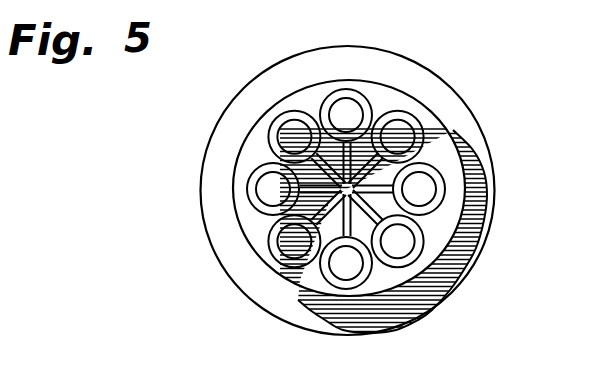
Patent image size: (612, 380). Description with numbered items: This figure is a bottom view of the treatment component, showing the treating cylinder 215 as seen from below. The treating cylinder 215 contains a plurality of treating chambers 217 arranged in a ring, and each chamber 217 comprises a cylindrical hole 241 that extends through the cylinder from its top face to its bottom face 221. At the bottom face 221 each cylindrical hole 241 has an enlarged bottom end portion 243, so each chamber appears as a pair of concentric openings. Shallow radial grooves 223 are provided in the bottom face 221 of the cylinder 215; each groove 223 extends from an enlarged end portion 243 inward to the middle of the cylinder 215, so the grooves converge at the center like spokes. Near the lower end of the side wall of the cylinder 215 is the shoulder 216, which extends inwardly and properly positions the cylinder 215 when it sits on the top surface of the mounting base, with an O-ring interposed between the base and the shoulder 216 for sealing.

The treating cylinder 215 is at (482, 247).
The shoulder 216 is at (289, 84).
The treating chambers 217 is at (343, 121).
The bottom face 221 is at (251, 163).
The radial grooves 223 is at (318, 215).
The cylindrical hole 241 is at (487, 208).
The enlarged bottom end portion 243 is at (461, 201).